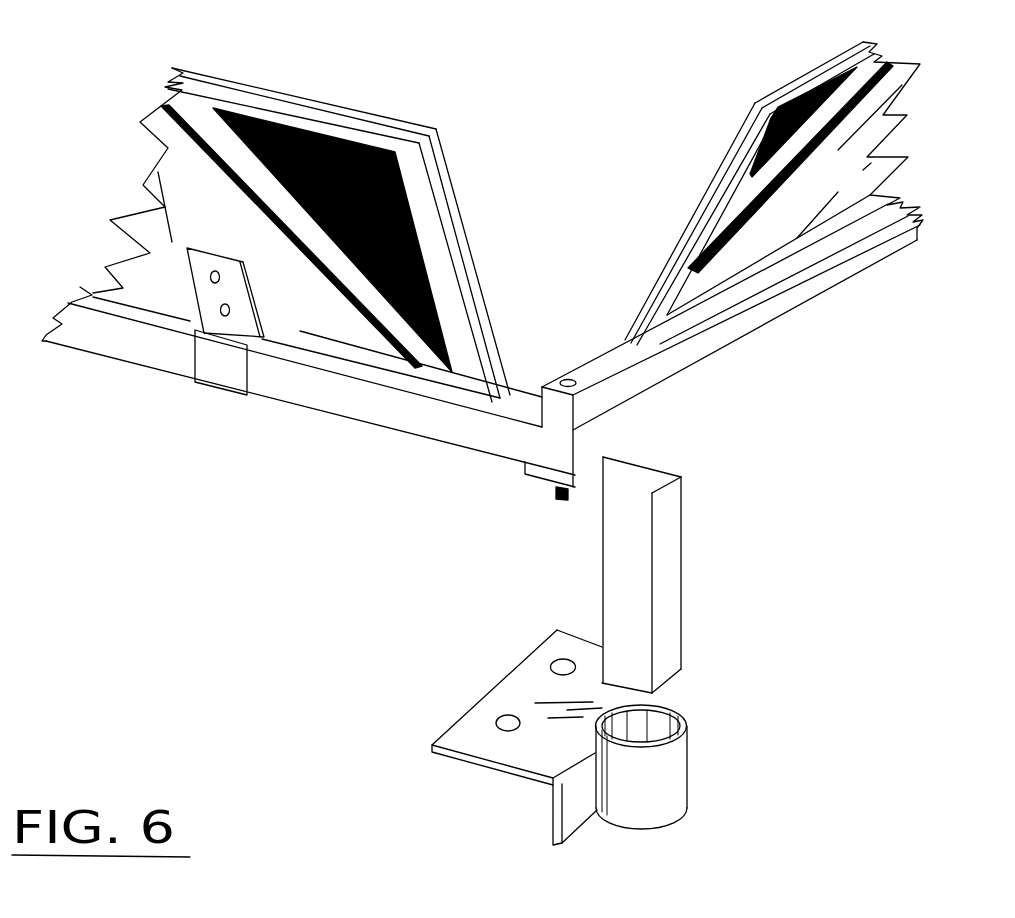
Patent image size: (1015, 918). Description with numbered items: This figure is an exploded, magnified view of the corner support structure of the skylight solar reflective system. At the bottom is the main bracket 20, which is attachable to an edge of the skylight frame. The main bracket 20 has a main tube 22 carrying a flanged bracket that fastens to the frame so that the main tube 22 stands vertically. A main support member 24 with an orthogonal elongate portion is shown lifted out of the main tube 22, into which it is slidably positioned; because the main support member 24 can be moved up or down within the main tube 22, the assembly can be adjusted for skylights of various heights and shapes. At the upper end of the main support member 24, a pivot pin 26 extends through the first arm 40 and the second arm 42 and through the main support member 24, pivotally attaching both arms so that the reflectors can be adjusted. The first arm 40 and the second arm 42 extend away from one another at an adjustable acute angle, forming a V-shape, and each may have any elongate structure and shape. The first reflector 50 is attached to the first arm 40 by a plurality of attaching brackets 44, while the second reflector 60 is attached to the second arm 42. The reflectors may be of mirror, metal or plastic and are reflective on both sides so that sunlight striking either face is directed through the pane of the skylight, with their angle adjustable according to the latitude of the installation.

The main bracket 20 is at (690, 670).
The main tube 22 is at (667, 775).
The main support member 24 is at (667, 590).
The pivot pin 26 is at (560, 378).
The first arm 40 is at (777, 295).
The second arm 42 is at (367, 405).
The attaching brackets 44 is at (218, 365).
The first reflector 50 is at (820, 170).
The second reflector 60 is at (395, 158).